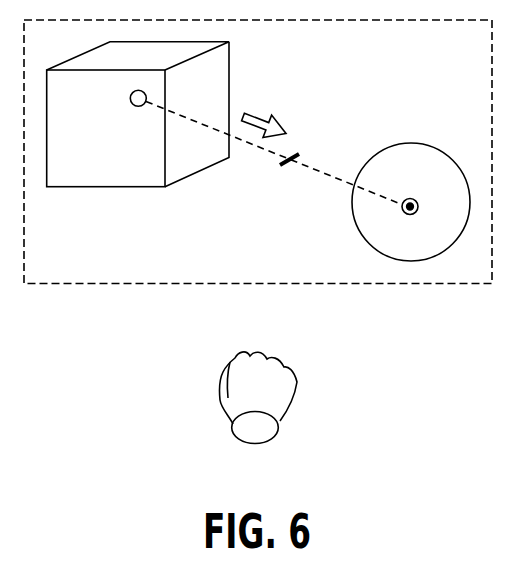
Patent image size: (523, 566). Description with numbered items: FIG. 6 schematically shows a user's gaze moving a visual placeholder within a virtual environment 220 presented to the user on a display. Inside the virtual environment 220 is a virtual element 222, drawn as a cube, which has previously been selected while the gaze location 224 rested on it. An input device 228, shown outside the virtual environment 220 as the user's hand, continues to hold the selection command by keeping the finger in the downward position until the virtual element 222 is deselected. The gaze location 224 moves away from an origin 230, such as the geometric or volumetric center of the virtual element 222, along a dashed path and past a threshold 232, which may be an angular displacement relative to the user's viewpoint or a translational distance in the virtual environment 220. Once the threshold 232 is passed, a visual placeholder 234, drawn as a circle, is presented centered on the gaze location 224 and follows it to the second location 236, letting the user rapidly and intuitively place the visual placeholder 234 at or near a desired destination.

The virtual environment 220 is at (80, 270).
The virtual element 222 is at (210, 78).
The gaze location 224 is at (410, 198).
The input device 228 is at (295, 388).
The origin 230 is at (137, 107).
The threshold 232 is at (291, 165).
The visual placeholder 234 is at (432, 257).
The second location 236 is at (403, 214).